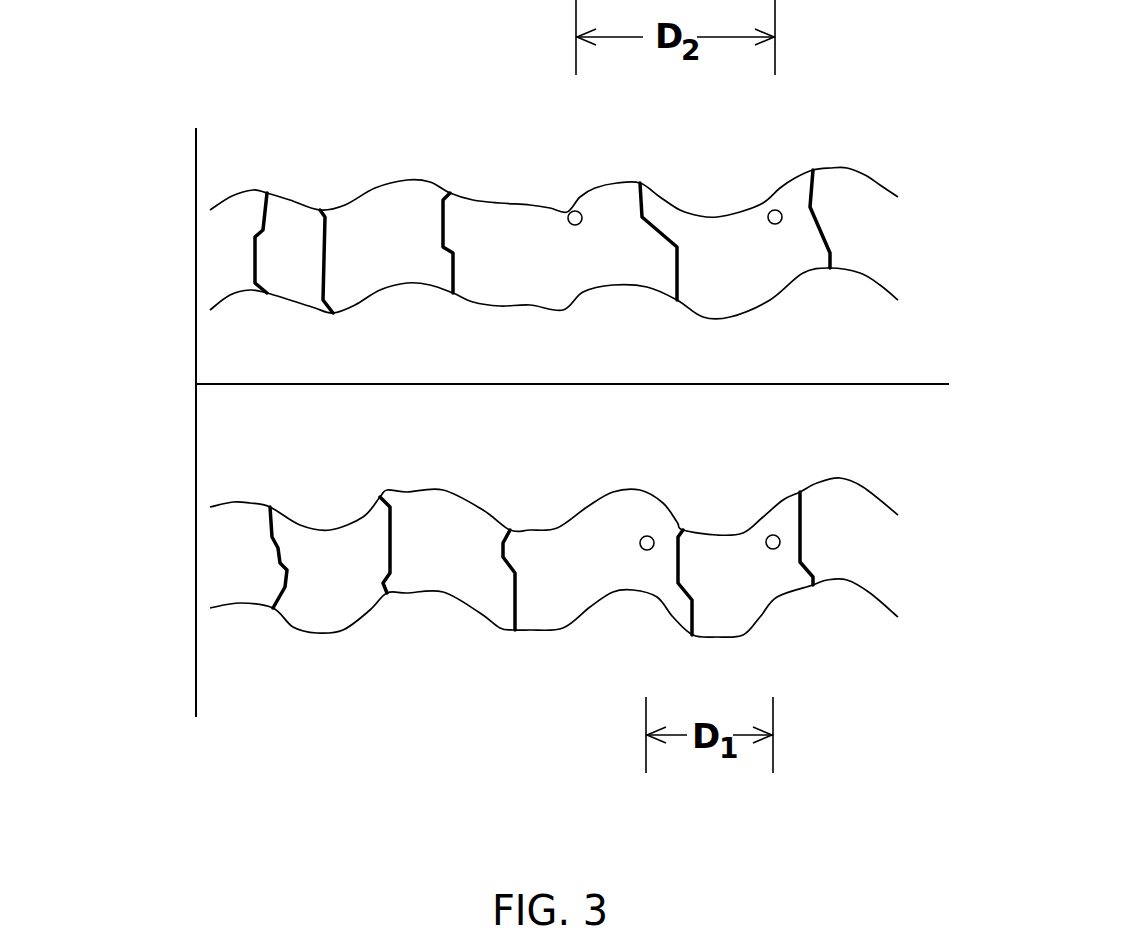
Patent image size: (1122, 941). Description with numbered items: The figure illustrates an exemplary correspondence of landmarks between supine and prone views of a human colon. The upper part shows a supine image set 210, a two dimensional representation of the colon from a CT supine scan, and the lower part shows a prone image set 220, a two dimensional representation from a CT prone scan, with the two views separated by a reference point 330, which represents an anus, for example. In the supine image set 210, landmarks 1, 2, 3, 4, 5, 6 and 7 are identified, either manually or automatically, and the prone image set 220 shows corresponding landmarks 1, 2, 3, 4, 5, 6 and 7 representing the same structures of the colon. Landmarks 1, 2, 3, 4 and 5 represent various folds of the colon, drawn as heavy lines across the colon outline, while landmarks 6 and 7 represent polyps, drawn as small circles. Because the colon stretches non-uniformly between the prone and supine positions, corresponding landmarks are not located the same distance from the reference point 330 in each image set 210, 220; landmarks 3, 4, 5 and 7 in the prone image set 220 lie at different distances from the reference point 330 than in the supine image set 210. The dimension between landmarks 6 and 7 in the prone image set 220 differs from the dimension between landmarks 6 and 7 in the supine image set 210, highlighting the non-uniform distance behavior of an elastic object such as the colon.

The landmark 1 is at (815, 380).
The landmark 2 is at (668, 412).
The landmark 3 is at (484, 413).
The landmark 4 is at (356, 401).
The landmark 5 is at (271, 401).
The landmark 6 is at (769, 211).
The landmark 7 is at (568, 212).
The supine image set 210 is at (172, 247).
The prone image set 220 is at (185, 562).
The reference point 330 is at (177, 383).